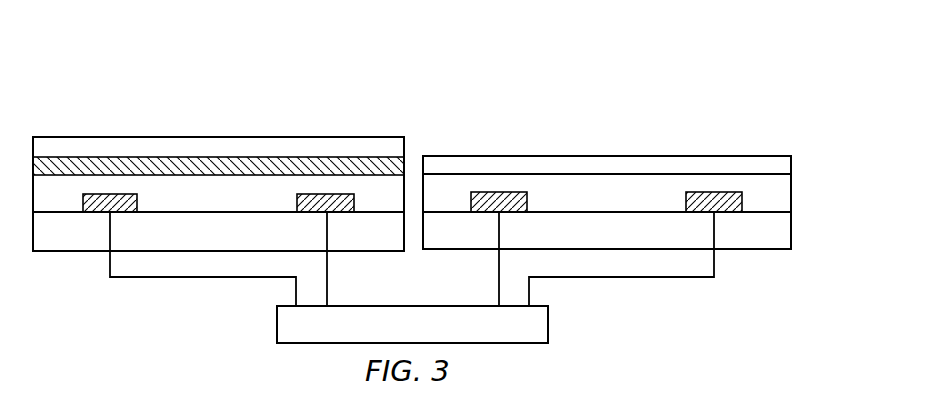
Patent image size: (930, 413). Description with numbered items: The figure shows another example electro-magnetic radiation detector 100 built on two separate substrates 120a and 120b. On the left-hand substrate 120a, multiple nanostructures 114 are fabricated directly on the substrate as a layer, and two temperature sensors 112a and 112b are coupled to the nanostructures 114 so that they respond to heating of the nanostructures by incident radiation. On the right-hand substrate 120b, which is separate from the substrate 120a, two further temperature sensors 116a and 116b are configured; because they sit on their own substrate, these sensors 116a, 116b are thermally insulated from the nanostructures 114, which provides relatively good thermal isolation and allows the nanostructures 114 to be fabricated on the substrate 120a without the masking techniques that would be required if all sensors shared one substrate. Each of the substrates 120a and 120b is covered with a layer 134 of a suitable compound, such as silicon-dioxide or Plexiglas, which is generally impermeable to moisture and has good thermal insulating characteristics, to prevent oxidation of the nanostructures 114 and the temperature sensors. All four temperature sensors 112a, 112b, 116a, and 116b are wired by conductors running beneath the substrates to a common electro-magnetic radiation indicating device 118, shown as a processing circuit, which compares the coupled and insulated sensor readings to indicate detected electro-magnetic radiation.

The electro-magnetic radiation detector 100 is at (494, 67).
The layer 134 is at (298, 118).
The nanostructures 114 is at (120, 158).
The temperature sensor 112a is at (138, 201).
The temperature sensor 112b is at (296, 201).
The temperature sensor 116a is at (528, 200).
The temperature sensor 116b is at (685, 201).
The substrate 120a is at (352, 251).
The substrate 120b is at (732, 252).
The electro-magnetic radiation indicating device 118 is at (549, 321).